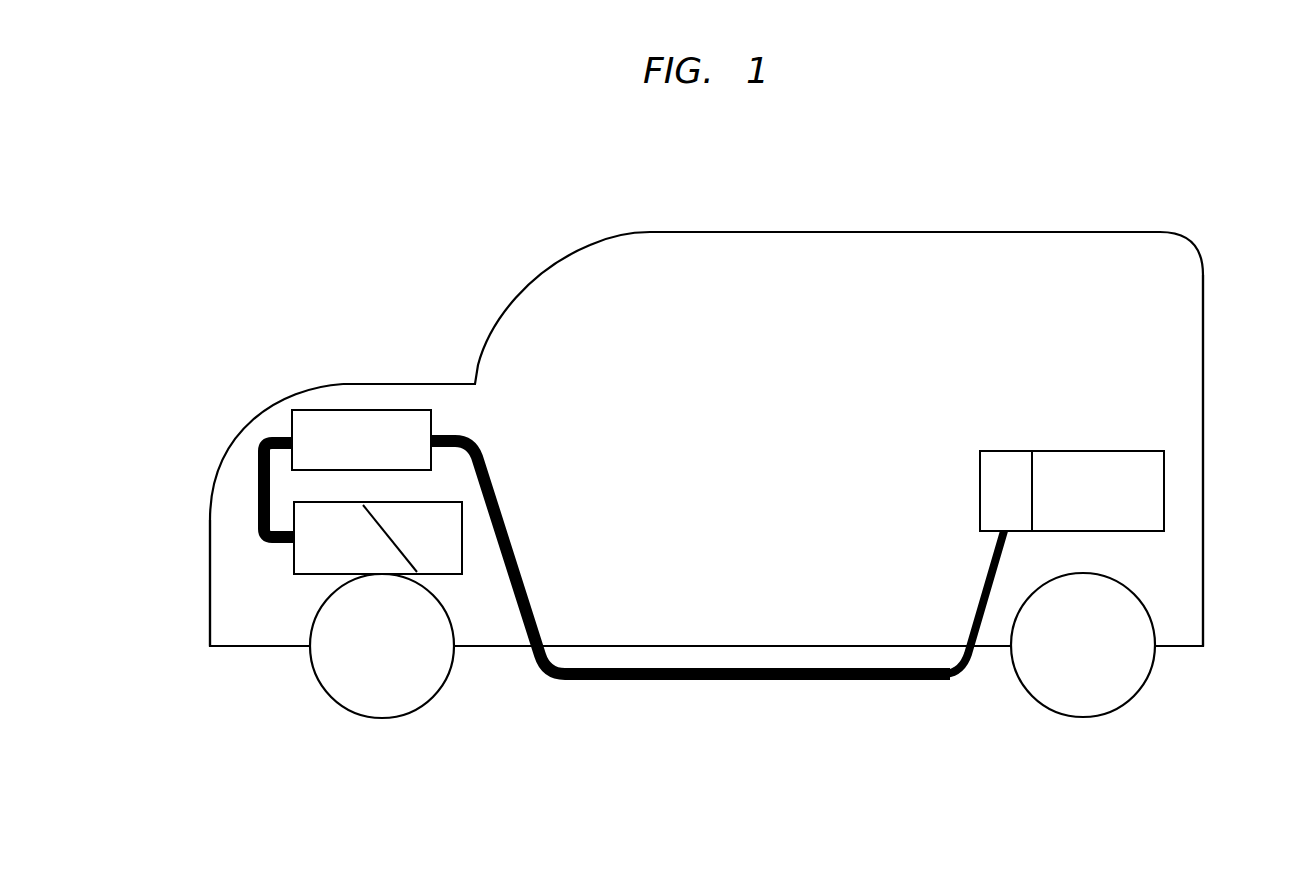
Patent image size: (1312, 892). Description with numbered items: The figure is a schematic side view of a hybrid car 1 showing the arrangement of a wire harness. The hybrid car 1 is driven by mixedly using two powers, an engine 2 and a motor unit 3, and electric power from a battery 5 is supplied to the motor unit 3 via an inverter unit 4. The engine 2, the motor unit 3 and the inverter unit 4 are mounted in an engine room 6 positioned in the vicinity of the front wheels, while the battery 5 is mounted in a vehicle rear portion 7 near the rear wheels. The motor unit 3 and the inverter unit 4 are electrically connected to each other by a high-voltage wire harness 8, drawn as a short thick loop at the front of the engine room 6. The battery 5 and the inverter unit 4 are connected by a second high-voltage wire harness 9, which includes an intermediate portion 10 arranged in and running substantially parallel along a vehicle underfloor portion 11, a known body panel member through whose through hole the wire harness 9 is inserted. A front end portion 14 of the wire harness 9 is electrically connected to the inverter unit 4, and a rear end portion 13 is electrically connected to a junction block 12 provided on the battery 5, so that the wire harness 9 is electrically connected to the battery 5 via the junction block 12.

The hybrid car 1 is at (383, 270).
The engine 2 is at (438, 547).
The motor unit 3 is at (312, 553).
The inverter unit 4 is at (328, 428).
The battery 5 is at (1105, 467).
The engine room 6 is at (235, 609).
The vehicle rear portion 7 is at (1173, 564).
The high-voltage wire harness 8 is at (255, 476).
The high-voltage wire harness 9 is at (633, 682).
The intermediate portion 10 is at (775, 681).
The vehicle underfloor portion 11 is at (886, 648).
The junction block 12 is at (992, 467).
The rear end portion 13 is at (989, 559).
The front end portion 14 is at (470, 441).